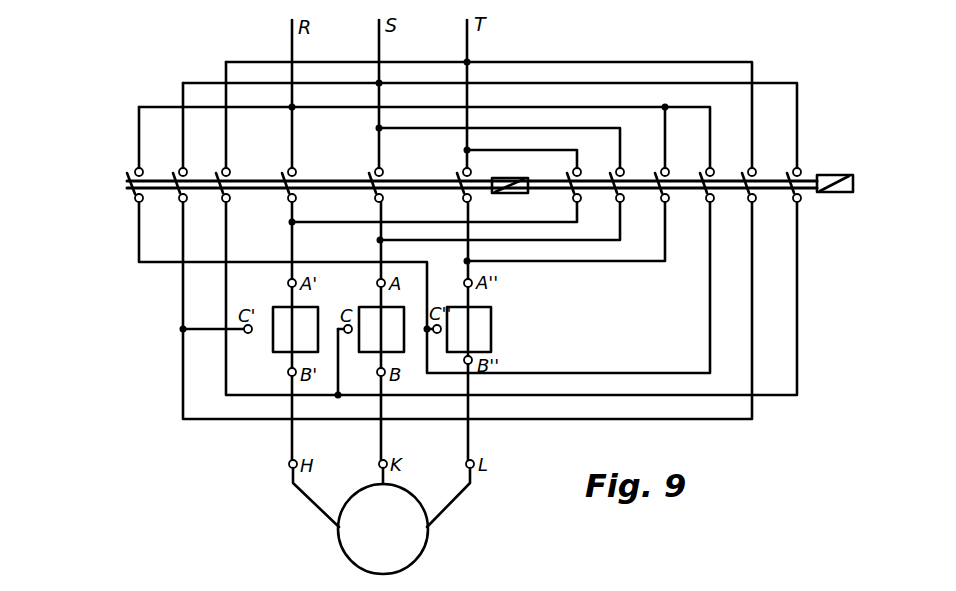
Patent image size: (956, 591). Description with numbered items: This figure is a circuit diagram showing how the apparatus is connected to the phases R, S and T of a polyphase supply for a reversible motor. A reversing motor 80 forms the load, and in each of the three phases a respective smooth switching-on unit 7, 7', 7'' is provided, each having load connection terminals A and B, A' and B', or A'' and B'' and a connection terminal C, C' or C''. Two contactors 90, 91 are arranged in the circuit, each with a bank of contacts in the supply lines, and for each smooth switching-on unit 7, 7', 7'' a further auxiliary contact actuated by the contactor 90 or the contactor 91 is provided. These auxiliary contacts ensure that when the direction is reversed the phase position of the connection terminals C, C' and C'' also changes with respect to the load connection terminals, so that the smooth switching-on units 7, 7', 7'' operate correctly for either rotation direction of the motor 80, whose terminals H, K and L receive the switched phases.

The smooth switching-on unit 7 is at (585, 377).
The smooth switching-on unit 7' is at (176, 379).
The smooth switching-on unit 7'' is at (571, 331).
The reversing motor 80 is at (415, 534).
The contactor 90 is at (515, 194).
The contactor 91 is at (838, 194).